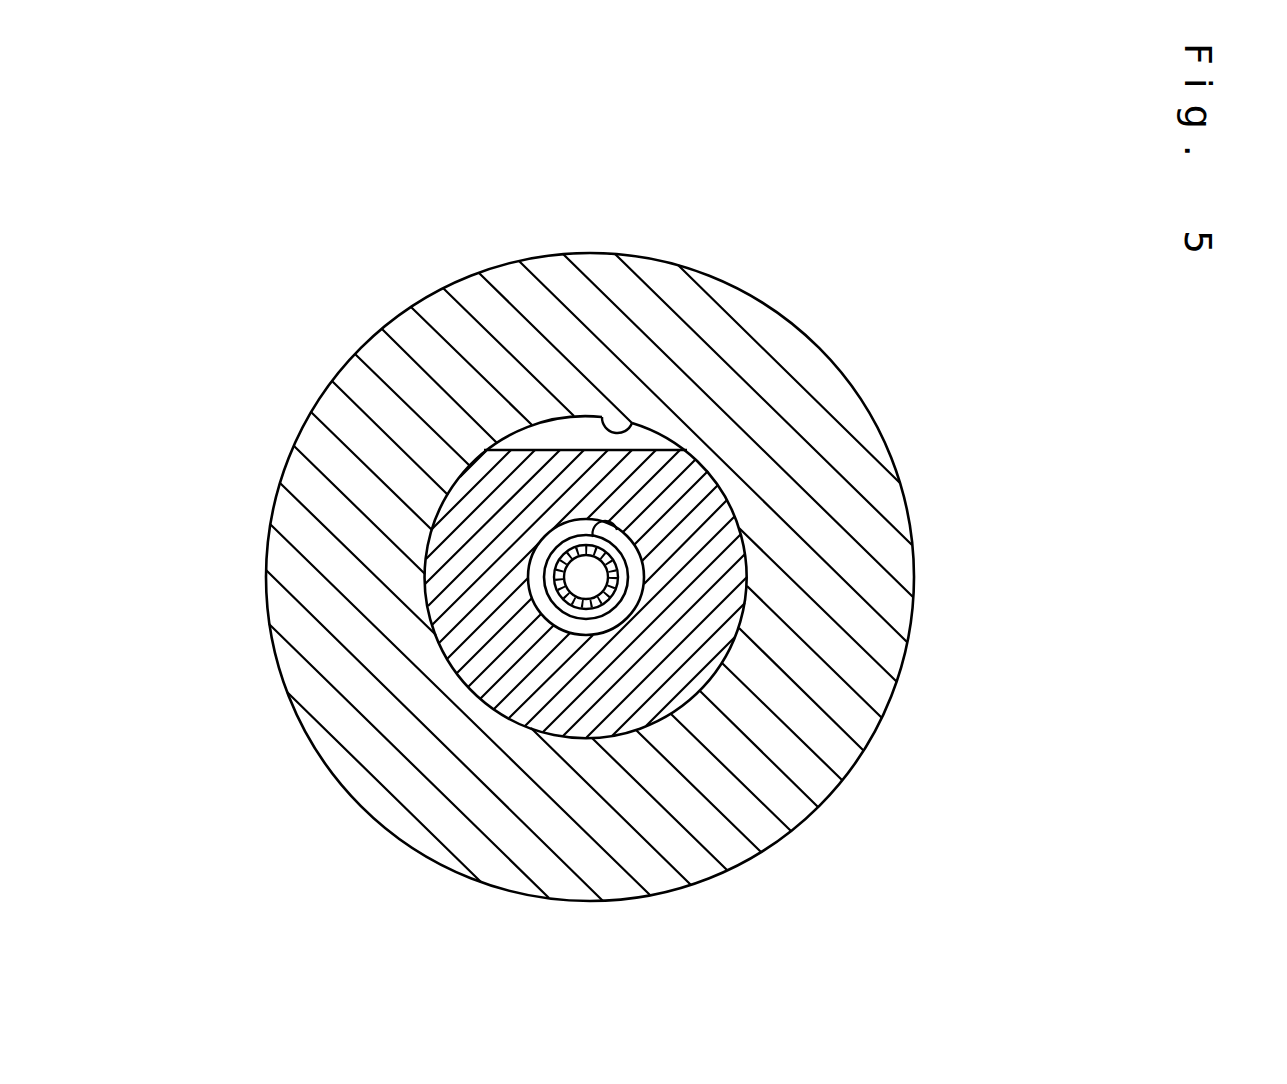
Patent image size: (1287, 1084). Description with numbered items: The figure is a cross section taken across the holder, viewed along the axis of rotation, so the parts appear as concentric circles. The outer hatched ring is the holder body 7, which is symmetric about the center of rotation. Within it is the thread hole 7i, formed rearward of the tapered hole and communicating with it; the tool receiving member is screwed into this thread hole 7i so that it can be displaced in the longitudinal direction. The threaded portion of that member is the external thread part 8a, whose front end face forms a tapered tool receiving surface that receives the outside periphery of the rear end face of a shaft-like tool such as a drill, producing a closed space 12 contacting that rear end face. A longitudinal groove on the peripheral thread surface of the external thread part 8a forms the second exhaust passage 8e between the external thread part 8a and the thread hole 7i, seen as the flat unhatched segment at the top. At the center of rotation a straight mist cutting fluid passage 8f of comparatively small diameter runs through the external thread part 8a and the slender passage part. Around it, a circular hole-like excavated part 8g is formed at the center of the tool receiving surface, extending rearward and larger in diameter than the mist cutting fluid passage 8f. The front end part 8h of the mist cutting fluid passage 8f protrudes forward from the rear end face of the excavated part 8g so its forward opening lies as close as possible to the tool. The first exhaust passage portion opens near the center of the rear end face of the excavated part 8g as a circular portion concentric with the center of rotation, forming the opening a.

The holder body 7 is at (590, 535).
The thread hole 7i is at (701, 333).
The external thread part 8a is at (700, 577).
The second exhaust passage 8e is at (585, 314).
The mist cutting fluid passage 8f is at (553, 741).
The excavated part 8g is at (780, 459).
The front end part 8h is at (761, 559).
The closed space 12 is at (390, 589).
The opening a is at (415, 649).